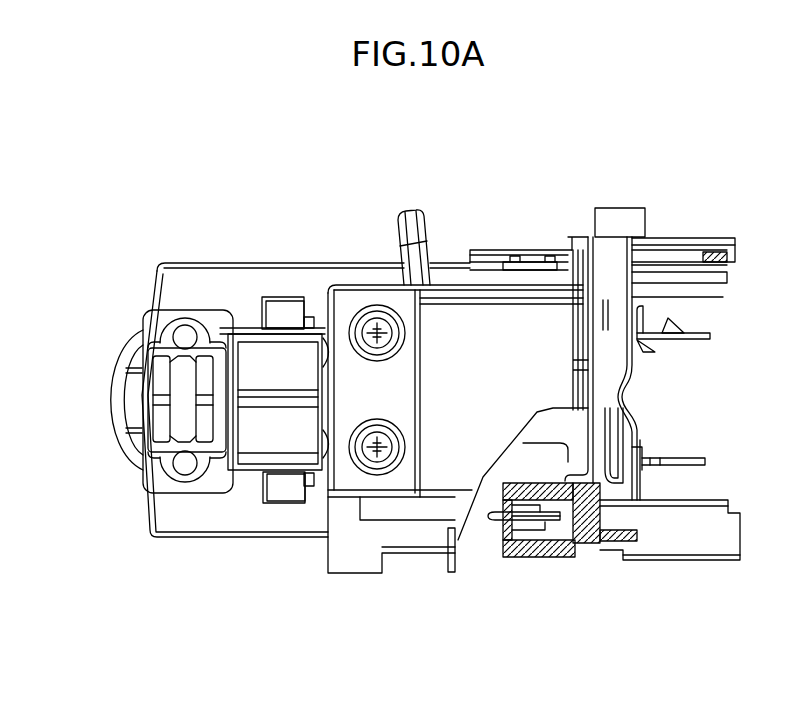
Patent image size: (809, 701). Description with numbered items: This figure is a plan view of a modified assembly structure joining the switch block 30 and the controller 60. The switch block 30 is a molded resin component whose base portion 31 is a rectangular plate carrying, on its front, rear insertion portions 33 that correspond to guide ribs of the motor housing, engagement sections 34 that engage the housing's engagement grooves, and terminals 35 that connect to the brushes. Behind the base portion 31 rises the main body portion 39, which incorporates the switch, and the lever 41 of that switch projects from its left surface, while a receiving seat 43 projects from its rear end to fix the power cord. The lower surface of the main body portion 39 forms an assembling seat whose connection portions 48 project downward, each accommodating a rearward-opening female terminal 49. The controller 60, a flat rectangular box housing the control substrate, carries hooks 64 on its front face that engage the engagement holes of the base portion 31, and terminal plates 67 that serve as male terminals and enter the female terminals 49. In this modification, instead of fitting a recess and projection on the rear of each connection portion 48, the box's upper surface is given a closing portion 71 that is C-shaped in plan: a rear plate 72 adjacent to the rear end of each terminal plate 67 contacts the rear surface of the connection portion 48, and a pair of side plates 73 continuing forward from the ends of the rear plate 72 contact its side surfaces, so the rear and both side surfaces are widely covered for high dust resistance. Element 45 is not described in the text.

The switch block 30 is at (340, 284).
The base portion 31 is at (607, 262).
The rear insertion portion 33 is at (680, 245).
The engagement section 34 is at (672, 321).
The terminal 35 is at (700, 458).
The main body portion 39 is at (458, 318).
The lever 41 is at (418, 214).
The receiving seat 43 is at (158, 342).
The contact 45 is at (725, 258).
The connection portion 48 is at (527, 272).
The female terminal 49 is at (568, 560).
The controller 60 is at (250, 258).
The hook 64 is at (650, 348).
The terminal plate 67 is at (520, 558).
The closing portion 71 is at (452, 568).
The rear plate 72 is at (490, 558).
The side plate 73 is at (533, 467).